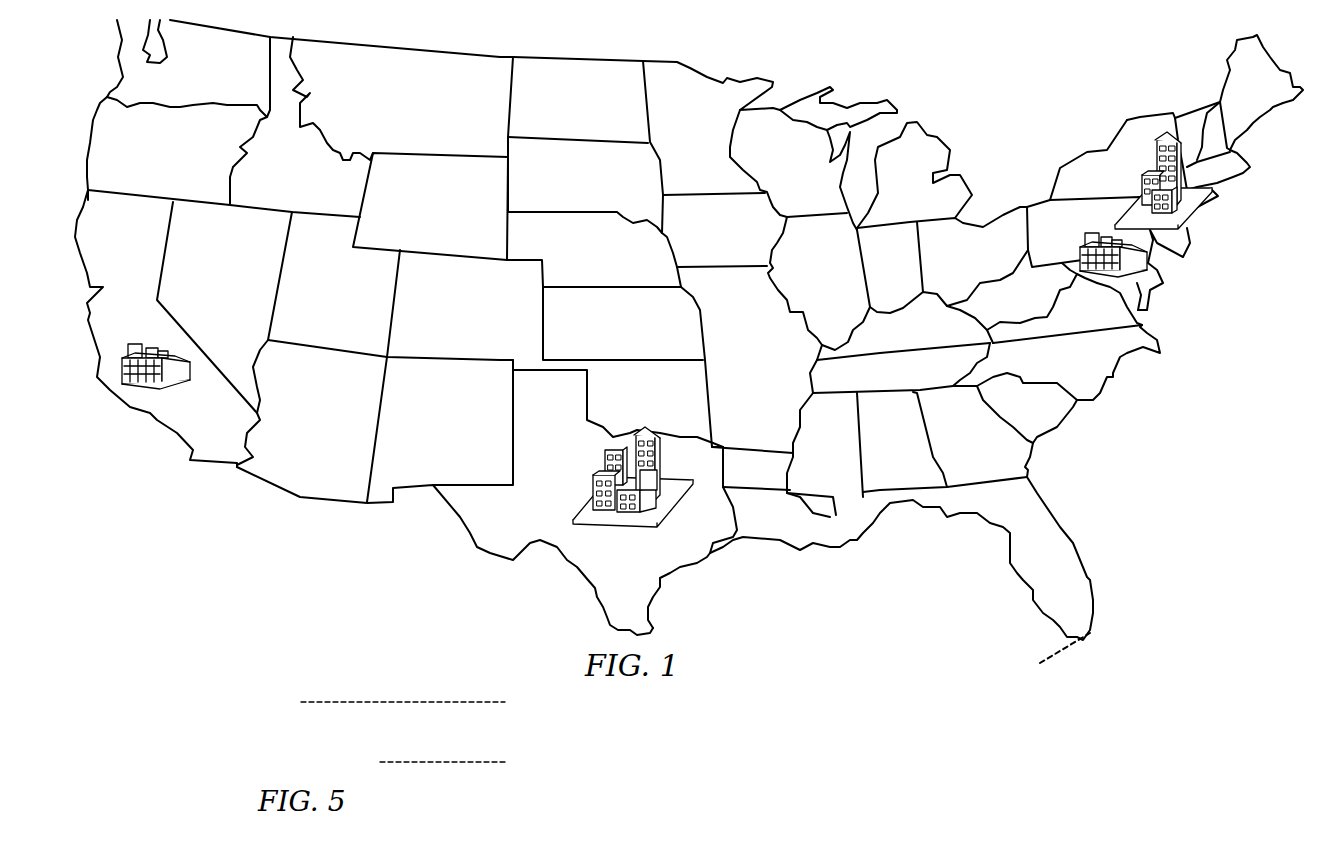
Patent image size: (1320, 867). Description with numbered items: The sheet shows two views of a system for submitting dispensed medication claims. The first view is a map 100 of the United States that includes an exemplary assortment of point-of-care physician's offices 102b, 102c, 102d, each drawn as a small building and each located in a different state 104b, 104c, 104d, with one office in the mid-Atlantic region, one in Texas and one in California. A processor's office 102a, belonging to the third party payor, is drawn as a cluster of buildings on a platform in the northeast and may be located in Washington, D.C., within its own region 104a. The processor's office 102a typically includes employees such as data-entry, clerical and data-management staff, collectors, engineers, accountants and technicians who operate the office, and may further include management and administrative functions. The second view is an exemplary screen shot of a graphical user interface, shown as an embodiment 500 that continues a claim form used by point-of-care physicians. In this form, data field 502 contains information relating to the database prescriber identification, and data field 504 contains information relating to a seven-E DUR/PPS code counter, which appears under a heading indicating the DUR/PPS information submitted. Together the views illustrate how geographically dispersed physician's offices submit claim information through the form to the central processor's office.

In FIG. 1, the map 100 is at (923, 73).
In FIG. 1, the processor's office 102a is at (1155, 157).
In FIG. 1, the point-of-care physician's office 102b is at (1097, 283).
In FIG. 1, the point-of-care physician's office 102c is at (617, 527).
In FIG. 1, the point-of-care physician's office 102d is at (140, 390).
In FIG. 1, the state 104a is at (1172, 248).
In FIG. 1, the state 104b is at (1053, 330).
In FIG. 1, the state 104c is at (580, 472).
In FIG. 1, the state 104d is at (145, 252).
In FIG. 5, the embodiment of a continuation of the Form UDF 500 is at (200, 662).
In FIG. 5, the data field 502 is at (163, 700).
In FIG. 5, the data field 504 is at (165, 762).